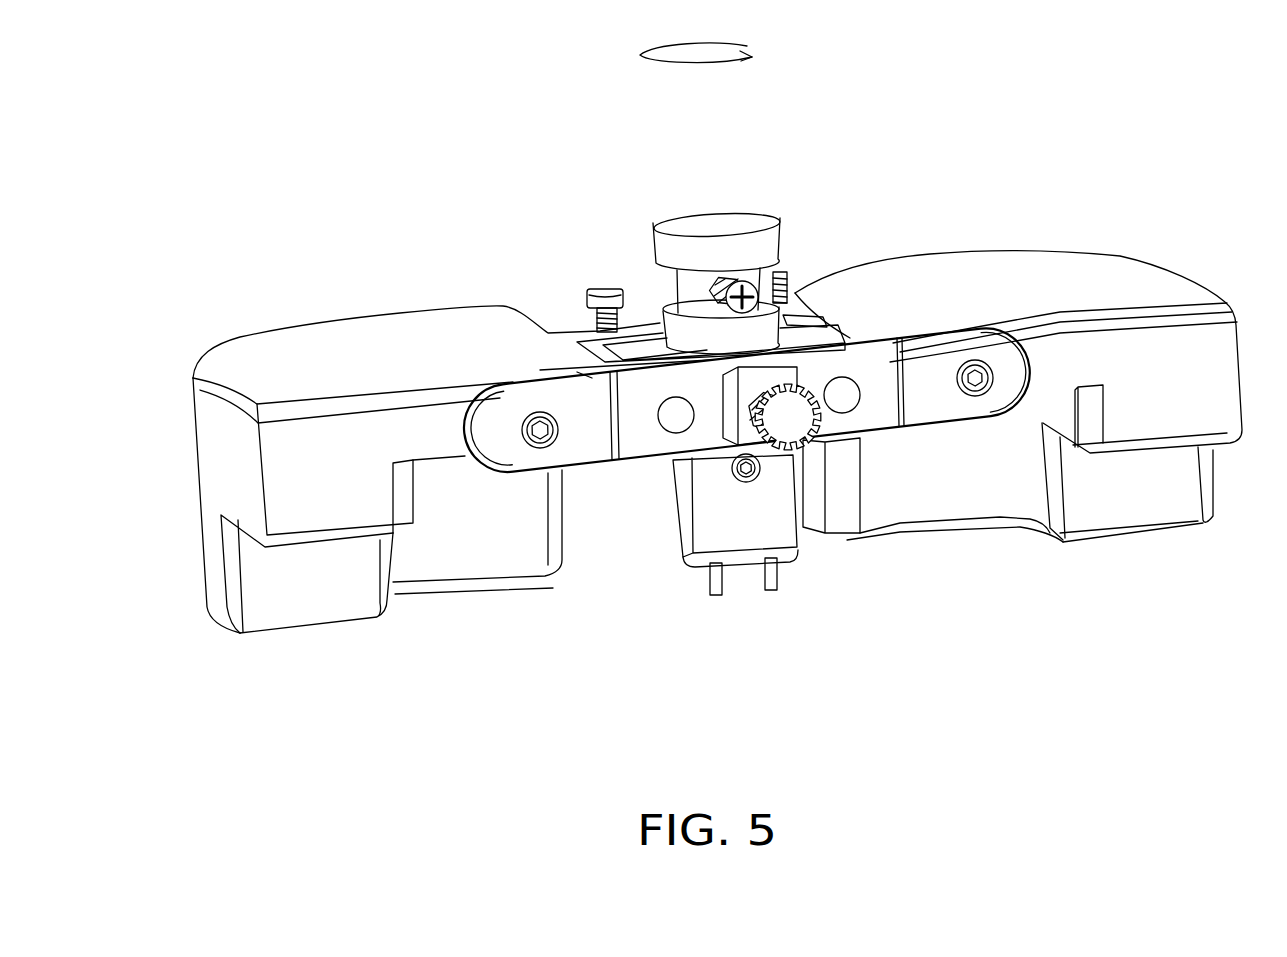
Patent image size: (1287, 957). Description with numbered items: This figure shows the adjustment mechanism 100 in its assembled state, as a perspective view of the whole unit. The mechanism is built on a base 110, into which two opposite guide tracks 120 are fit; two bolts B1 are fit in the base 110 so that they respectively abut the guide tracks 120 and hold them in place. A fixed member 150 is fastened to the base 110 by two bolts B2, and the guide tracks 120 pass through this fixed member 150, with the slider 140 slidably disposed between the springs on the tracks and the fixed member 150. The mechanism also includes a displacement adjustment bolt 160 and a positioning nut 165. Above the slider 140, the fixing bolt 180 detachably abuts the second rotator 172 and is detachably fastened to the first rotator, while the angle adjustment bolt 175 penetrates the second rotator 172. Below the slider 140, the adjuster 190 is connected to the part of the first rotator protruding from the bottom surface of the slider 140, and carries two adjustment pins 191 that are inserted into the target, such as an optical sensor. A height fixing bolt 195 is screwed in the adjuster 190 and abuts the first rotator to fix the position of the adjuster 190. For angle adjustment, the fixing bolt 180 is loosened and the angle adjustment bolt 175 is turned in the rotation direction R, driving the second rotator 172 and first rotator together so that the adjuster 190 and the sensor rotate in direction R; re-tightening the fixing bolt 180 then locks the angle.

The adjustment mechanism 100 is at (130, 89).
The base 110 is at (1147, 253).
The guide tracks 120 is at (670, 422).
The slider 140 is at (822, 333).
The fixed member 150 is at (577, 442).
The displacement adjustment bolt 160 is at (790, 435).
The positioning nut 165 is at (577, 372).
The second rotator 172 is at (652, 285).
The angle adjustment bolt 175 is at (742, 292).
The fixing bolt 180 is at (707, 230).
The adjuster 190 is at (683, 524).
The adjustment pins 191 is at (769, 591).
The height fixing bolt 195 is at (750, 472).
The bolts B1 is at (595, 291).
The bolts B2 is at (537, 446).
The rotation direction R is at (696, 33).